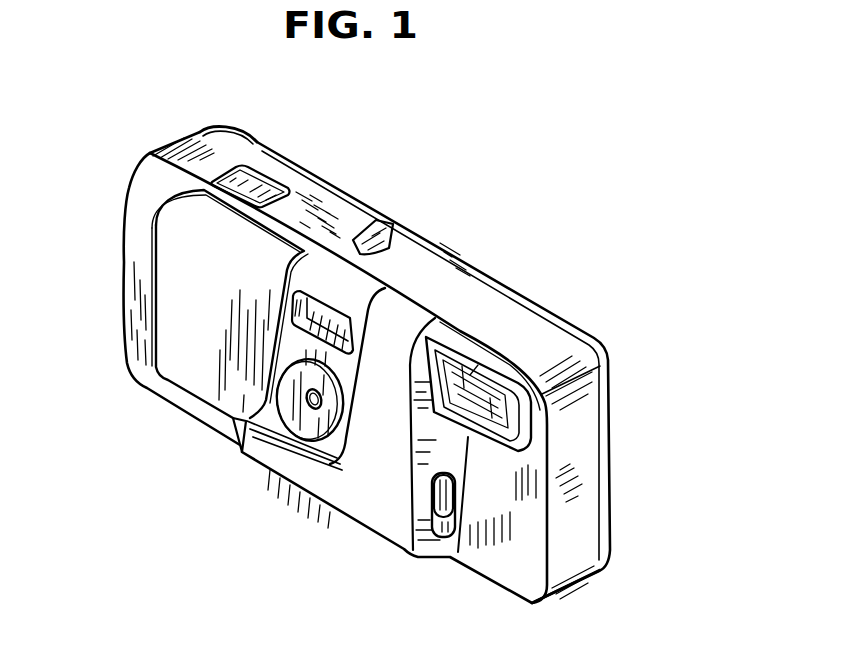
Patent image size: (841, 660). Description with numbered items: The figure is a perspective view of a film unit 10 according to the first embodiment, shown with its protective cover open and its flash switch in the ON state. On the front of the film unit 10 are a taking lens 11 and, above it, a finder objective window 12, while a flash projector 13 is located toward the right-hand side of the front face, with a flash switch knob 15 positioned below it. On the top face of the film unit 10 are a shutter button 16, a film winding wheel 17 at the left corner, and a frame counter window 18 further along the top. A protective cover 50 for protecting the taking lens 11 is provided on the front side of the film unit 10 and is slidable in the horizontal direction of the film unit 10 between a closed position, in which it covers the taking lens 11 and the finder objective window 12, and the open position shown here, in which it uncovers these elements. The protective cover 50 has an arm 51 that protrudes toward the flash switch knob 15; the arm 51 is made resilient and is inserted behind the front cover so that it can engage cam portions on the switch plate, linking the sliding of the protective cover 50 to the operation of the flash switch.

The film unit 10 is at (367, 367).
The taking lens 11 is at (322, 401).
The finder objective window 12 is at (340, 304).
The flash projector 13 is at (500, 430).
The flash switch knob 15 is at (437, 493).
The shutter button 16 is at (261, 185).
The film winding wheel 17 is at (233, 129).
The frame counter window 18 is at (383, 223).
The protective cover 50 is at (243, 318).
The arm 51 is at (245, 450).